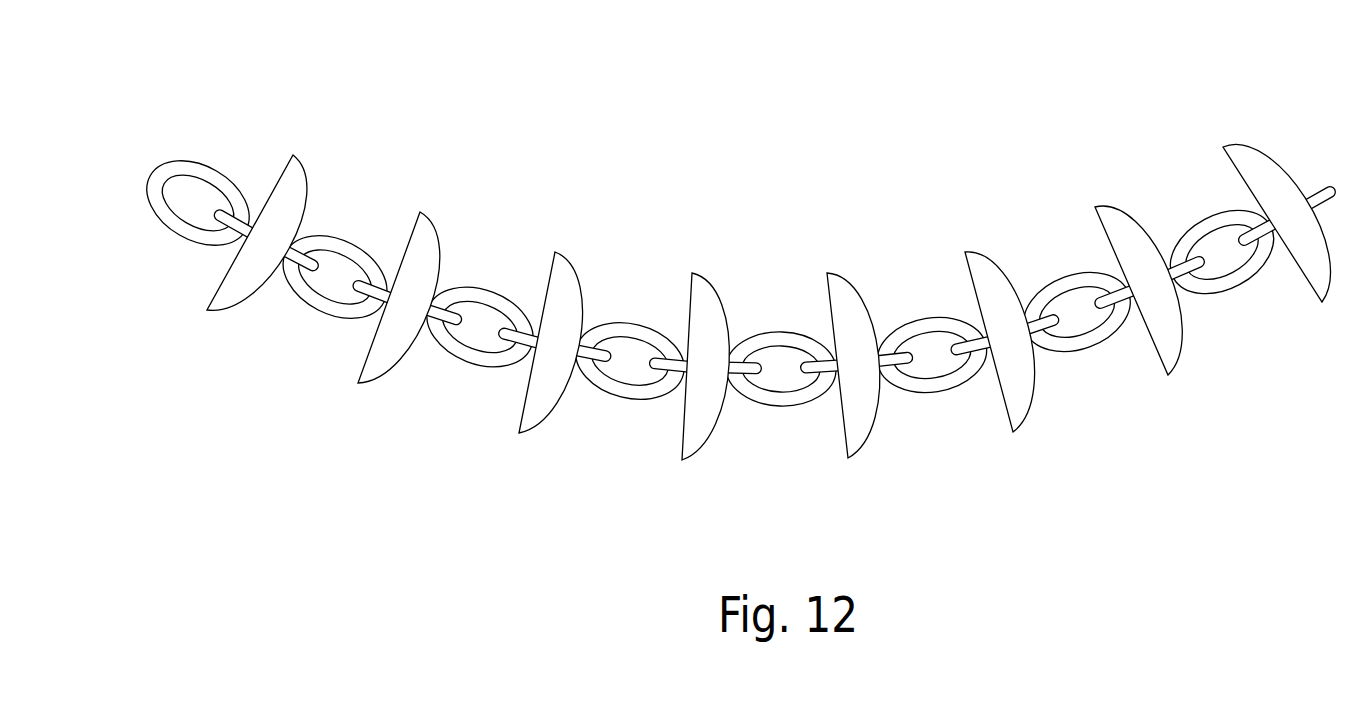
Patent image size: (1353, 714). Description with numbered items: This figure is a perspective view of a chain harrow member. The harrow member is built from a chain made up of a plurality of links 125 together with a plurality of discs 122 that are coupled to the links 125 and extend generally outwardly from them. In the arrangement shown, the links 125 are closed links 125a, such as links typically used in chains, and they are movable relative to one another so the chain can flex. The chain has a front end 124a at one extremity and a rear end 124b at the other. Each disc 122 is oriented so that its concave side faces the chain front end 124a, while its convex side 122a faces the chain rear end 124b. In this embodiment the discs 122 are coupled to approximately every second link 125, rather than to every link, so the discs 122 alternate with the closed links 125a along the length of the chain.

The disc 122 is at (845, 270).
The convex side 122a is at (1018, 394).
The front end 124a is at (1323, 163).
The rear end 124b is at (160, 150).
The link 125 is at (886, 346).
The closed link 125a is at (1112, 295).